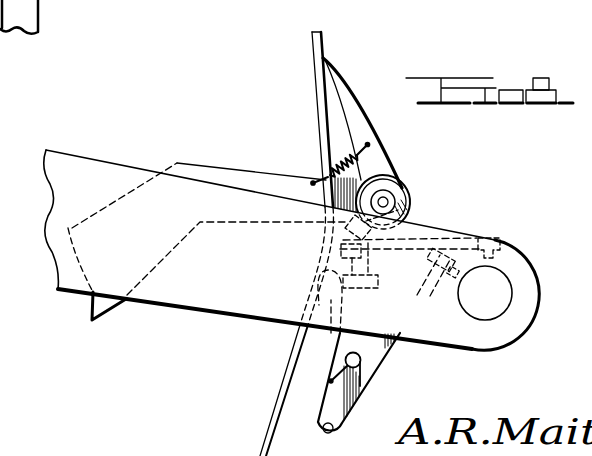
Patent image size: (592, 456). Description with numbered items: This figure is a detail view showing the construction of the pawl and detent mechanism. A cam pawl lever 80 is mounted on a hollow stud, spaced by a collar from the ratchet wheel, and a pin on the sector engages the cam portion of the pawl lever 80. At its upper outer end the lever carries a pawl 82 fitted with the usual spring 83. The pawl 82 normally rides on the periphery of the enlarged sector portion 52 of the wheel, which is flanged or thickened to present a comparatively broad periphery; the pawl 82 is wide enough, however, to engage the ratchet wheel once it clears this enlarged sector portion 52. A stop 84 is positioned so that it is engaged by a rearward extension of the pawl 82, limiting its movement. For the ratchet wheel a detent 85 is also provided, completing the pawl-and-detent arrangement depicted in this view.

The sector portion 52 is at (317, 44).
The cam pawl lever 80 is at (217, 177).
The pawl 82 is at (359, 120).
The spring 83 is at (338, 154).
The stop 84 is at (339, 243).
The detent 85 is at (330, 348).